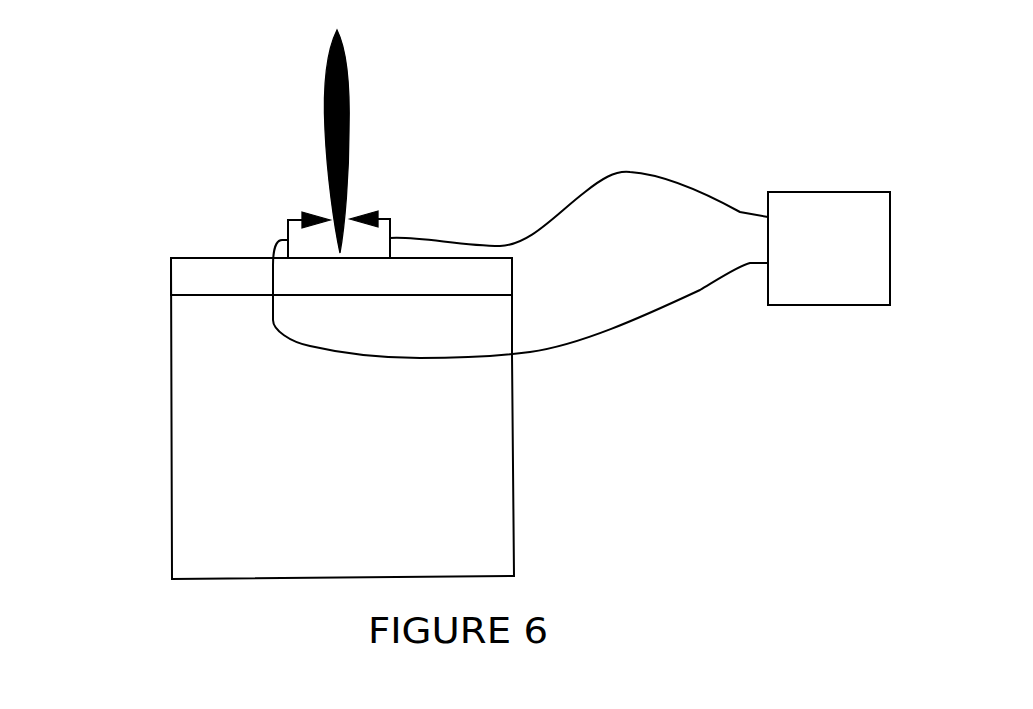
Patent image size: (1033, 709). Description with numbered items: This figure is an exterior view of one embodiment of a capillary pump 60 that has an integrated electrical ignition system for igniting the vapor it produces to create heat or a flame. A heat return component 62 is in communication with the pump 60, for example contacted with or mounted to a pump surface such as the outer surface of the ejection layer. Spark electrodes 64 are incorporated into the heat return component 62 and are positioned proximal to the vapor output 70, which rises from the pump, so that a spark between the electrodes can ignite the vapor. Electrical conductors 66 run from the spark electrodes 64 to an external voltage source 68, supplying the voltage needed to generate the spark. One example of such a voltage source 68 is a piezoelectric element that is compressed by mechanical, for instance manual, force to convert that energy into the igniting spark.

The capillary pump 60 is at (215, 458).
The heat return component 62 is at (171, 281).
The spark electrodes 64 is at (390, 218).
The electrical conductors 66 is at (650, 173).
The external voltage source 68 is at (827, 210).
The vapor output 70 is at (327, 138).